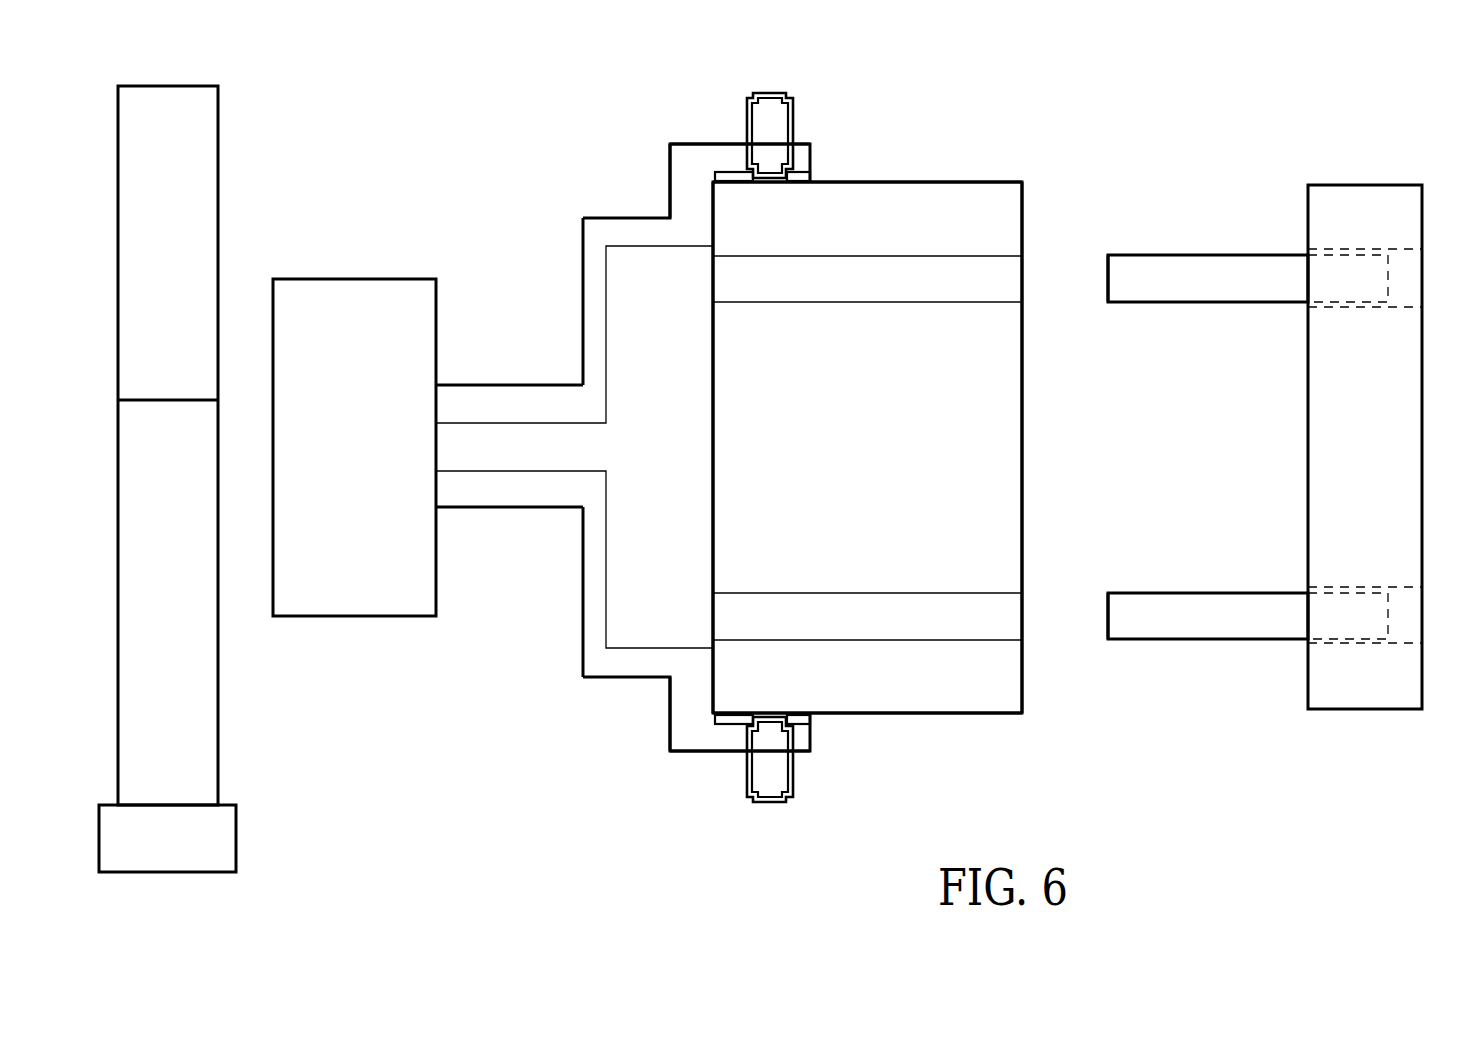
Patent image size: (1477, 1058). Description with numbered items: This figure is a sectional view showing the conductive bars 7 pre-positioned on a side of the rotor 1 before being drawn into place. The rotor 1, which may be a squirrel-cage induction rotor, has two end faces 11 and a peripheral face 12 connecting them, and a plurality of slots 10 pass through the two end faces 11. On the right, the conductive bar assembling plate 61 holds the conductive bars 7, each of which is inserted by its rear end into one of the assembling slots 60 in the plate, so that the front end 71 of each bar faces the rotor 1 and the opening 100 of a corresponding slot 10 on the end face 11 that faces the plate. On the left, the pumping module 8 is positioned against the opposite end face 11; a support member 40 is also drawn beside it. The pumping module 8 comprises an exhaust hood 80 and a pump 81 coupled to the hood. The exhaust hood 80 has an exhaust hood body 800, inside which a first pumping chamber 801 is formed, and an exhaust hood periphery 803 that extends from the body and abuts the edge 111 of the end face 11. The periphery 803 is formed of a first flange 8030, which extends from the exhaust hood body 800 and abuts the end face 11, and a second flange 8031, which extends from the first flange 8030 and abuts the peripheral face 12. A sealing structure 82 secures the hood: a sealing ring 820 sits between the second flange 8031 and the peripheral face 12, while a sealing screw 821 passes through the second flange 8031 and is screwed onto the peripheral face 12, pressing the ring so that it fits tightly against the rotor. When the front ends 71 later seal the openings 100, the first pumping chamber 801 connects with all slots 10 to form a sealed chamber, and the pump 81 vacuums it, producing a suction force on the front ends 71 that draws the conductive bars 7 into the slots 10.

The rotor 1 is at (903, 100).
The conductive bars 7 is at (1206, 243).
The pumping module 8 is at (512, 680).
The slots 10 is at (842, 285).
The end faces 11 is at (713, 437).
The peripheral face 12 is at (832, 181).
The support member 40 is at (192, 137).
The assembling slots 60 is at (1408, 277).
The conductive bar assembling plate 61 is at (1366, 690).
The front end 71 is at (1108, 280).
The exhaust hood 80 is at (574, 447).
The pump 81 is at (333, 600).
The sealing structure 82 is at (786, 453).
The opening 100 is at (1027, 277).
The edge 111 is at (712, 184).
The exhaust hood body 800 is at (506, 405).
The first pumping chamber 801 is at (648, 370).
The exhaust hood periphery 803 is at (665, 107).
The sealing ring 820 is at (812, 172).
The sealing screw 821 is at (772, 124).
The first flange 8030 is at (635, 232).
The second flange 8031 is at (725, 160).